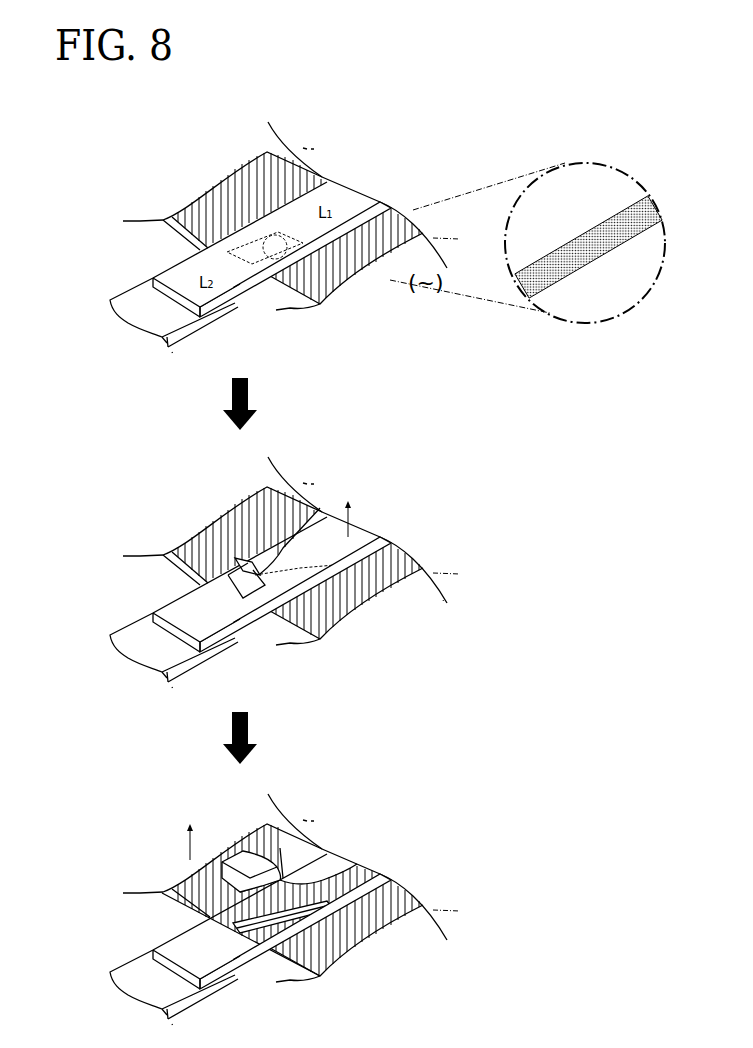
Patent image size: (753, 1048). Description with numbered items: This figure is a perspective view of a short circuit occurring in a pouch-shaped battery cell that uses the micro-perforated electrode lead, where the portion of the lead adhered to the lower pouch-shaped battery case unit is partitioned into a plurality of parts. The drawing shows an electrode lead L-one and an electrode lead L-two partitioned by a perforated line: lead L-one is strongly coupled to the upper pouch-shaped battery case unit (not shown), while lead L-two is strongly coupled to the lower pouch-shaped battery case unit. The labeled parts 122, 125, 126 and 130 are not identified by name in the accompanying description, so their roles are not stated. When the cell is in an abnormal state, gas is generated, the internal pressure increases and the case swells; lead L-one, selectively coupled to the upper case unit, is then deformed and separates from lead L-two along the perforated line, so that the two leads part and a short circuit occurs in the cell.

The second electrode lead 122 is at (159, 328).
The first electrode lead 125 is at (238, 286).
The adhesive member 126 is at (547, 274).
The insulating film 130 is at (340, 275).